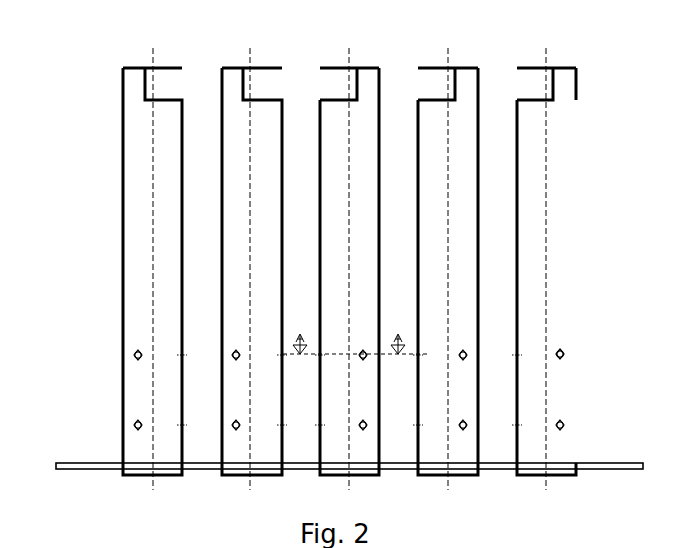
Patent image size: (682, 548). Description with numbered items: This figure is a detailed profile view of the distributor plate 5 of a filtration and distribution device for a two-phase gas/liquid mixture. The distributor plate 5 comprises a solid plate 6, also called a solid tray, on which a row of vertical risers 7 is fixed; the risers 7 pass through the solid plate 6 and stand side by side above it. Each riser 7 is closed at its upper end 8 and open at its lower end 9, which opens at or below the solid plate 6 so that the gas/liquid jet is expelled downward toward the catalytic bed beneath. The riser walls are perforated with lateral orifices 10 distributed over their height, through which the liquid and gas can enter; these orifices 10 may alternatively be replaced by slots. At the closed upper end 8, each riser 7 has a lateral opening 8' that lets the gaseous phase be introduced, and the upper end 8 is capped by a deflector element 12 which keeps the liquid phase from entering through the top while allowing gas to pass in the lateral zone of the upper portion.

The distributor plate 5 is at (55, 240).
The solid plate 6 is at (208, 470).
The vertical riser 7 is at (579, 273).
The upper end 8 is at (563, 56).
The lateral opening 8' is at (334, 60).
The lower end 9 is at (558, 476).
The lateral orifice 10 is at (561, 353).
The deflector element 12 is at (432, 68).